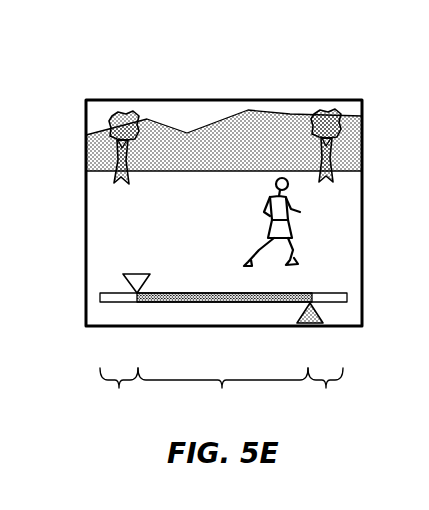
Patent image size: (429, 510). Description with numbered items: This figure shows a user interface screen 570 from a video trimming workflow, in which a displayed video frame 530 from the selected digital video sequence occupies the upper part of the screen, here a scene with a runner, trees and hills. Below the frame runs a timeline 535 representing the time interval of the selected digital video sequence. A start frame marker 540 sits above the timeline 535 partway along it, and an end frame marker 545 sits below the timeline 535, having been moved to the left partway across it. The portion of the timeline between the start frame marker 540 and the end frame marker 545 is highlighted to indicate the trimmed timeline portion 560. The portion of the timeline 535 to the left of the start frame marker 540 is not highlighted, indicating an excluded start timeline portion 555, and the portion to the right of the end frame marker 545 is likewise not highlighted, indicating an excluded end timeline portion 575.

The displayed video frame 530 is at (96, 128).
The user interface screen 570 is at (225, 100).
The timeline 535 is at (222, 303).
The start frame marker 540 is at (128, 283).
The end frame marker 545 is at (320, 311).
The excluded start timeline portion 555 is at (119, 394).
The trimmed timeline portion 560 is at (223, 394).
The excluded end timeline portion 575 is at (325, 394).